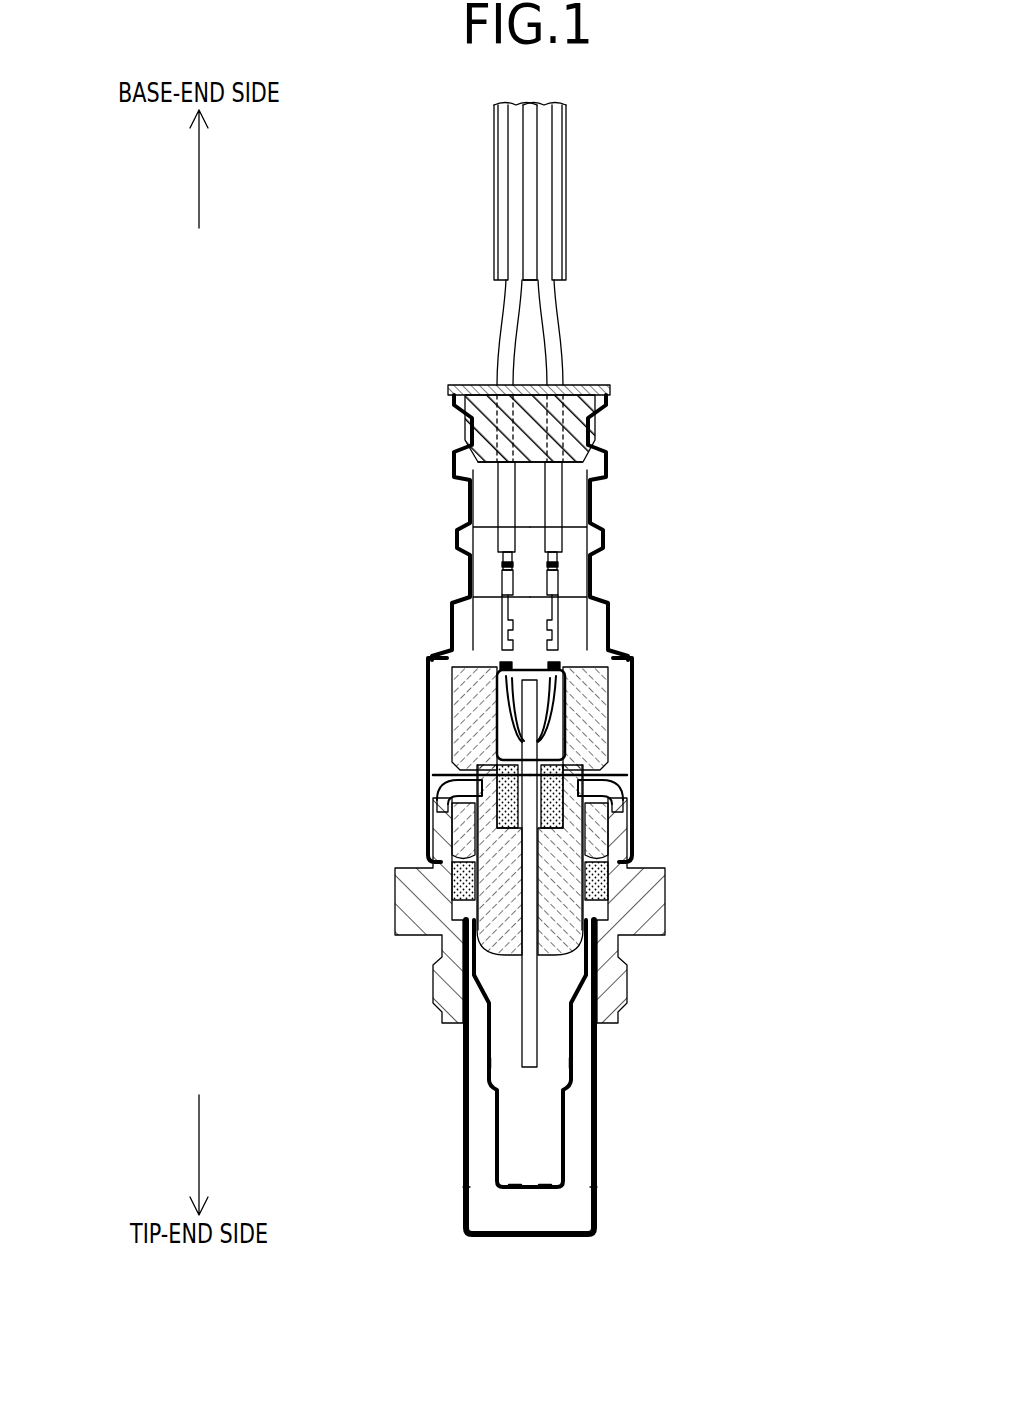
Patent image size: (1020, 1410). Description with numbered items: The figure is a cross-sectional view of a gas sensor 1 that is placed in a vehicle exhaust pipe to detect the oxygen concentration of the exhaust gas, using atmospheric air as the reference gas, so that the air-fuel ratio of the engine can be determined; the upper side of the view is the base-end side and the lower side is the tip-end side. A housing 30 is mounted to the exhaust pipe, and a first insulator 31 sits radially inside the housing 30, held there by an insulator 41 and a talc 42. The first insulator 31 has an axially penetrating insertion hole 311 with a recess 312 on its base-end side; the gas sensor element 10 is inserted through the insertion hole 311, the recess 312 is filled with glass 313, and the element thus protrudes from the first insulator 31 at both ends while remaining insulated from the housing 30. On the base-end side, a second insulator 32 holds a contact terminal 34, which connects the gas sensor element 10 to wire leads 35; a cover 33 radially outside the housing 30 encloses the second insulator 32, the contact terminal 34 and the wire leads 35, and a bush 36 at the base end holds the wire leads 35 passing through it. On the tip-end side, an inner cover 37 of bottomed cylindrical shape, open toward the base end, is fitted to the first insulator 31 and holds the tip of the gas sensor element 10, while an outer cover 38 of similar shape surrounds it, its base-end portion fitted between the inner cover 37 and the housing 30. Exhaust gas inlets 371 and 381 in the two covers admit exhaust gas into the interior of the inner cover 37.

The gas sensor 1 is at (662, 371).
The gas sensor element 10 is at (523, 992).
The housing 30 is at (660, 917).
The first insulator 31 is at (500, 906).
The insertion hole 311 is at (485, 876).
The recess 312 is at (462, 812).
The glass 313 is at (556, 821).
The second insulator 32 is at (467, 720).
The cover 33 is at (428, 682).
The contact terminal 34 is at (553, 728).
The wire leads 35 is at (500, 487).
The bush 36 is at (470, 435).
The inner cover 37 is at (497, 1150).
The exhaust gas inlets 371 is at (489, 1062).
The outer cover 38 is at (597, 1150).
The exhaust gas inlets 381 is at (466, 1211).
The insulator 41 is at (603, 840).
The talc 42 is at (605, 884).